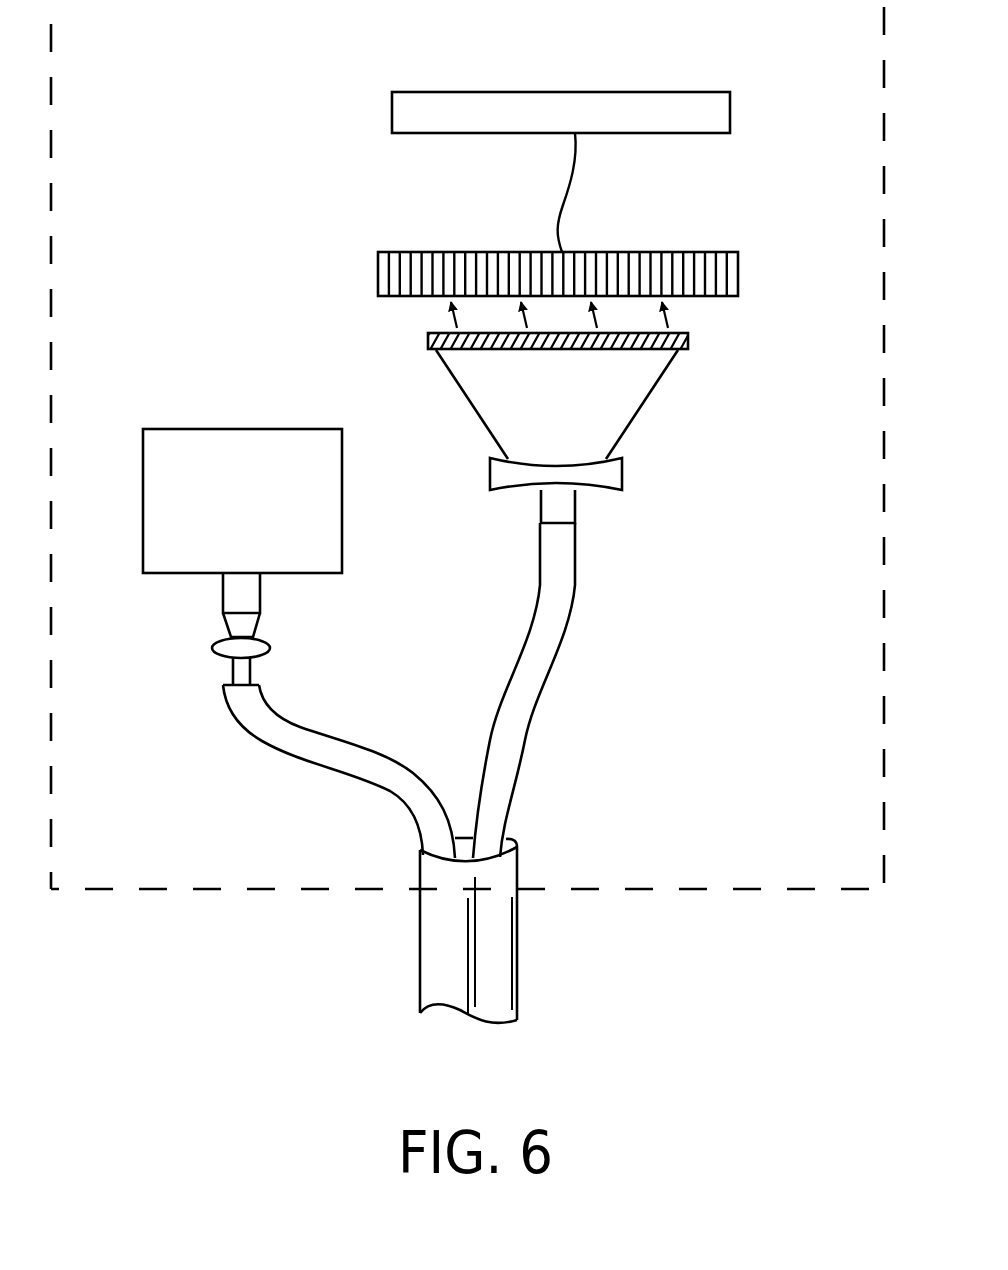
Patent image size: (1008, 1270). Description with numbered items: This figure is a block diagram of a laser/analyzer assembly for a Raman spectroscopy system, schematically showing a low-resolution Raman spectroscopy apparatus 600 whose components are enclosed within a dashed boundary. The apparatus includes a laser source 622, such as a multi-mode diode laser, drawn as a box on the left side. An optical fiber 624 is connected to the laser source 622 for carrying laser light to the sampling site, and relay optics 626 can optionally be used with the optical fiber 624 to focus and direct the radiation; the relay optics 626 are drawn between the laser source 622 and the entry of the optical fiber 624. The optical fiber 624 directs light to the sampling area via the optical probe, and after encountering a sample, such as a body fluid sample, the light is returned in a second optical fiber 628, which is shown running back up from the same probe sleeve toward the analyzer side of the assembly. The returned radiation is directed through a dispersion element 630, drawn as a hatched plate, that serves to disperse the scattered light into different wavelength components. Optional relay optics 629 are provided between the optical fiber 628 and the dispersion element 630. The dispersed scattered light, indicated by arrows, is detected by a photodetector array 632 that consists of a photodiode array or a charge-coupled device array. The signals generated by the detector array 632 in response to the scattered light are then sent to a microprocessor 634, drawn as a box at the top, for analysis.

The low-resolution Raman spectroscopy apparatus 600 is at (145, 889).
The laser source 622 is at (265, 518).
The optical fiber 624 is at (333, 750).
The relay optics 626 is at (212, 647).
The second optical fiber 628 is at (538, 682).
The relay optics 629 is at (622, 474).
The dispersion element 630 is at (688, 340).
The photodetector array 632 is at (738, 272).
The microprocessor 634 is at (730, 110).